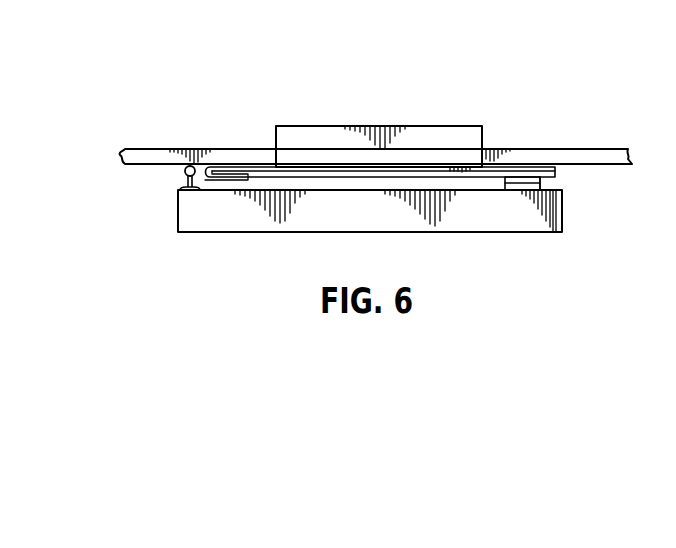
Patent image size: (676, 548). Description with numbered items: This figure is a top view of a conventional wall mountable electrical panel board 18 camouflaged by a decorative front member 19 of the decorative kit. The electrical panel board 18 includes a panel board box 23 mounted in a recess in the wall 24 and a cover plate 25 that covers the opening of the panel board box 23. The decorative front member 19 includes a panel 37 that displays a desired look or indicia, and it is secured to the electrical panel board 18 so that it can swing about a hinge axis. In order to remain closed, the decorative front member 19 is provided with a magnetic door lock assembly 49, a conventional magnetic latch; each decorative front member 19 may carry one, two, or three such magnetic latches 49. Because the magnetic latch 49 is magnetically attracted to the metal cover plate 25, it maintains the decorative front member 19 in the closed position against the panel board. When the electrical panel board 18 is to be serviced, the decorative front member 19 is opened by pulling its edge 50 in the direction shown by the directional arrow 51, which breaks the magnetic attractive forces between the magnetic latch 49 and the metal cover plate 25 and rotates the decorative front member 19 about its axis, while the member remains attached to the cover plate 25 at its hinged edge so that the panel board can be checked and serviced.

The electrical panel board 18 is at (432, 116).
The decorative front member 19 is at (162, 238).
The panel board box 23 is at (318, 147).
The wall 24 is at (548, 148).
The cover plate 25 is at (432, 172).
The panel 37 is at (229, 218).
The magnetic door lock assembly 49 is at (540, 183).
The edge 50 is at (563, 212).
The directional arrow 51 is at (508, 305).